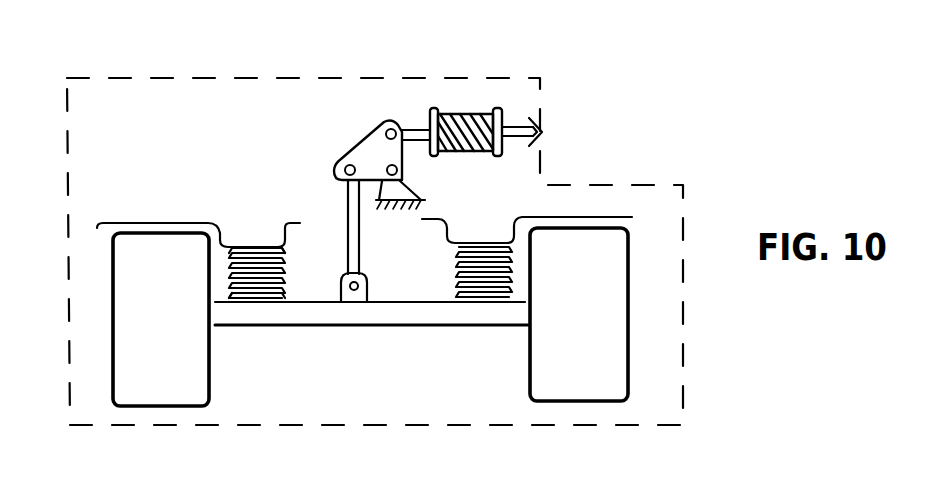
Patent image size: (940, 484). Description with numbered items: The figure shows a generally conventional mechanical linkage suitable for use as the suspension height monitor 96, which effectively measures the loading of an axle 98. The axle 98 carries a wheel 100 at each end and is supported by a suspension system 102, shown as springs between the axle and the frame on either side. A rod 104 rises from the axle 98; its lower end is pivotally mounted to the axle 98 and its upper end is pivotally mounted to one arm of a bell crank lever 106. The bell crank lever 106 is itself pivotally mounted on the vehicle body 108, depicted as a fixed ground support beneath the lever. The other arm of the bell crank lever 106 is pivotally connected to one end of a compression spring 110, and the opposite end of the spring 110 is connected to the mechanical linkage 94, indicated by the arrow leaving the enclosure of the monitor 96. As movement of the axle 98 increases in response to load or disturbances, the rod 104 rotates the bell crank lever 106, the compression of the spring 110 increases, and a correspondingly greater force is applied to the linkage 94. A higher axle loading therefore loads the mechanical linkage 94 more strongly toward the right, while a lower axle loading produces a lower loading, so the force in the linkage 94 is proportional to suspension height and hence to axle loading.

The mechanical linkage 94 is at (527, 123).
The suspension height monitor 96 is at (305, 77).
The axle 98 is at (331, 327).
The wheel 100 is at (212, 362).
The suspension system 102 is at (258, 241).
The rod 104 is at (362, 248).
The bell crank lever 106 is at (342, 160).
The vehicle body 108 is at (427, 205).
The compression spring 110 is at (453, 110).